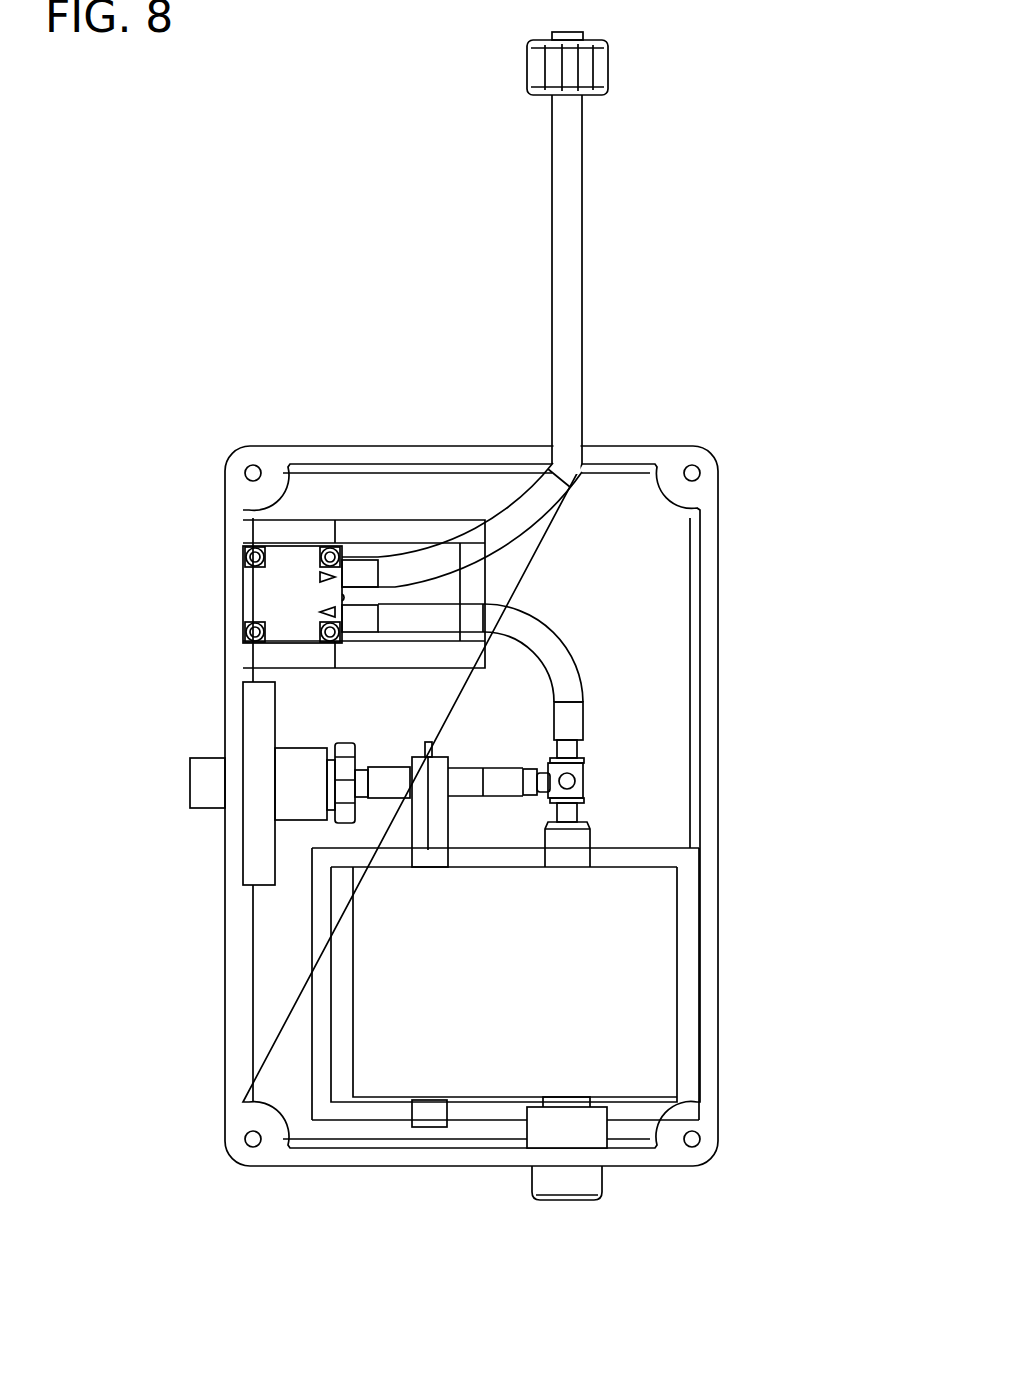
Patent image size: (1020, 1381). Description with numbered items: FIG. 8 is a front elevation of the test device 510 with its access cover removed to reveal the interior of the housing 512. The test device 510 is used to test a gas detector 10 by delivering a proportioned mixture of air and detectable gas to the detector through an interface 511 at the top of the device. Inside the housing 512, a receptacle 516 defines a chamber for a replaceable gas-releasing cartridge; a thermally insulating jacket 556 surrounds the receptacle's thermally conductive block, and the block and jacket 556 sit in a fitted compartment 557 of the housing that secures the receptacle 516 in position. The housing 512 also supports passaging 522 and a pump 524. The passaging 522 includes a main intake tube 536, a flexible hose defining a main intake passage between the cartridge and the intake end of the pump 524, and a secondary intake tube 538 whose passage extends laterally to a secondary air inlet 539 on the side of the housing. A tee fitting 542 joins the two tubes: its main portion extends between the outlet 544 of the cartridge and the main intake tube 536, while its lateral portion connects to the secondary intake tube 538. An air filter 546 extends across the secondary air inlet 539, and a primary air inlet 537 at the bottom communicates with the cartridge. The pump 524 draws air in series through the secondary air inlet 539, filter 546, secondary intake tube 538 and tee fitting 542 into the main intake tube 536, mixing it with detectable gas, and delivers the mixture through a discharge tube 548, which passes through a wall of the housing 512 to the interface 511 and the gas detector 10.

The test device 510 is at (162, 1253).
The interface 511 is at (597, 70).
The discharge tube 548 is at (574, 222).
The housing 512 is at (720, 725).
The pump 524 is at (268, 595).
The passaging 522 is at (603, 670).
The main intake tube 536 is at (547, 642).
The tee fitting 542 is at (577, 773).
The outlet 544 is at (583, 837).
The secondary intake tube 538 is at (467, 778).
The secondary air inlet 539 is at (207, 767).
The air filter 546 is at (258, 858).
The thermally insulating jacket 556 is at (473, 1068).
The fitted compartment 557 is at (633, 857).
The receptacle 516 is at (372, 1102).
The primary air inlet 537 is at (590, 1182).
The gas detector 10 is at (613, 575).